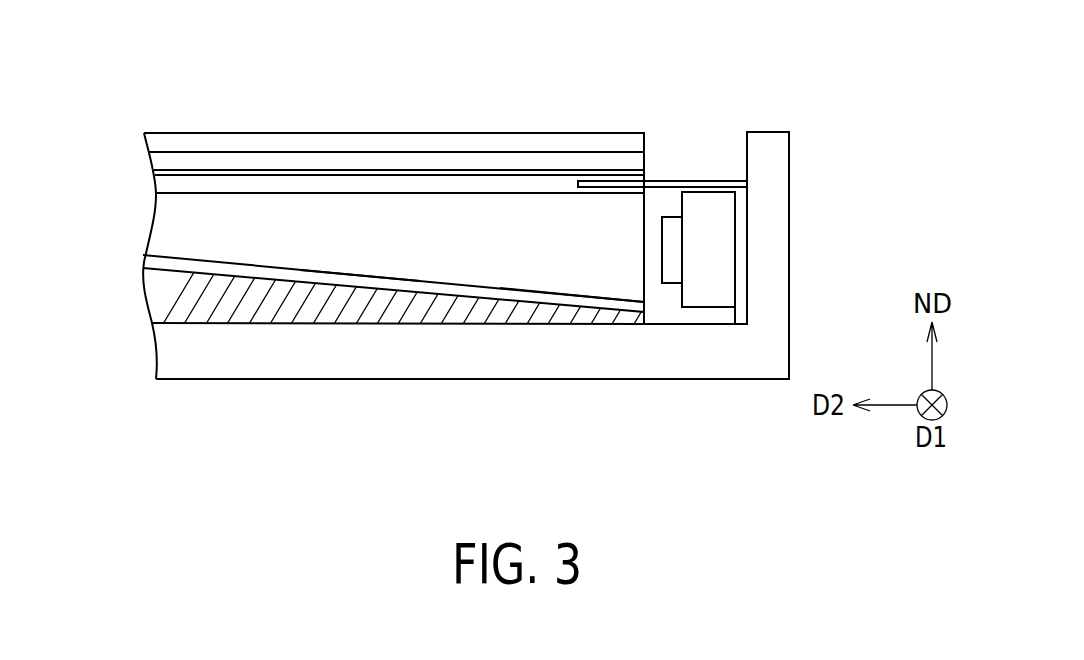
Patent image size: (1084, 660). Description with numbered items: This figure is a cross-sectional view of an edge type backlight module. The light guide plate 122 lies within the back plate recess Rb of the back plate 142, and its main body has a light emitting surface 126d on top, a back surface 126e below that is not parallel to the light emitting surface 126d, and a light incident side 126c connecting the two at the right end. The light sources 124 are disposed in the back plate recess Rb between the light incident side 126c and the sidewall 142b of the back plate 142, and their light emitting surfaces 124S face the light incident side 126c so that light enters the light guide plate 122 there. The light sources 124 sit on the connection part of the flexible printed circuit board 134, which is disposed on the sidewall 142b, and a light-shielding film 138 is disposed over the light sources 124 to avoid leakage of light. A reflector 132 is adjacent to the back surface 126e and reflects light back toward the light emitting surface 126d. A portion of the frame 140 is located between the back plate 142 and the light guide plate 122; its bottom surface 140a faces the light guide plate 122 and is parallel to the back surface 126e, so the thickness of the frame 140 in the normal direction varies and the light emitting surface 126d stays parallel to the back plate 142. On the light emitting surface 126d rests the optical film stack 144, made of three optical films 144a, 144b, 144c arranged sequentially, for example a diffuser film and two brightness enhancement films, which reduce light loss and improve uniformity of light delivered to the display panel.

The light guide plate 122 is at (321, 243).
The light source 124 is at (712, 277).
The light emitting surface of light source 124S is at (662, 262).
The light incident side 126c is at (645, 216).
The light emitting surface 126d is at (528, 192).
The back surface 126e is at (568, 297).
The reflector 132 is at (425, 287).
The flexible printed circuit board 134 is at (740, 239).
The light-shielding film 138 is at (715, 181).
The frame 140 is at (275, 325).
The bottom surface of frame portion 140a is at (211, 270).
The back plate 142 is at (373, 358).
The sidewall of back plate 142b is at (748, 212).
The optical film stack 144 is at (394, 97).
The optical film 144a is at (155, 87).
The optical film 144b is at (269, 160).
The optical film 144c is at (187, 143).
The back plate recess Rb is at (687, 137).